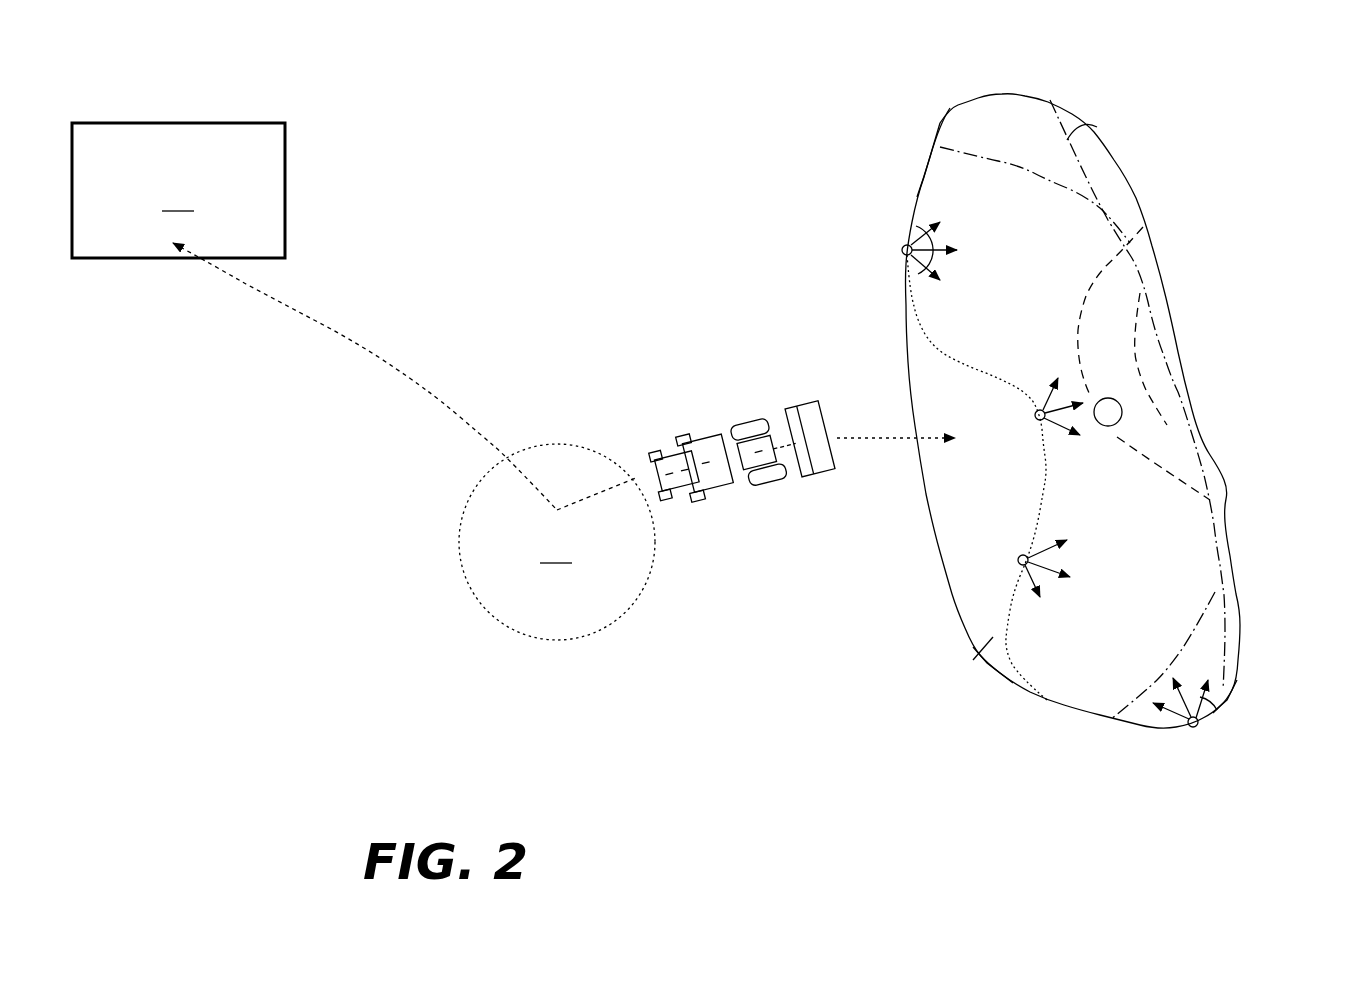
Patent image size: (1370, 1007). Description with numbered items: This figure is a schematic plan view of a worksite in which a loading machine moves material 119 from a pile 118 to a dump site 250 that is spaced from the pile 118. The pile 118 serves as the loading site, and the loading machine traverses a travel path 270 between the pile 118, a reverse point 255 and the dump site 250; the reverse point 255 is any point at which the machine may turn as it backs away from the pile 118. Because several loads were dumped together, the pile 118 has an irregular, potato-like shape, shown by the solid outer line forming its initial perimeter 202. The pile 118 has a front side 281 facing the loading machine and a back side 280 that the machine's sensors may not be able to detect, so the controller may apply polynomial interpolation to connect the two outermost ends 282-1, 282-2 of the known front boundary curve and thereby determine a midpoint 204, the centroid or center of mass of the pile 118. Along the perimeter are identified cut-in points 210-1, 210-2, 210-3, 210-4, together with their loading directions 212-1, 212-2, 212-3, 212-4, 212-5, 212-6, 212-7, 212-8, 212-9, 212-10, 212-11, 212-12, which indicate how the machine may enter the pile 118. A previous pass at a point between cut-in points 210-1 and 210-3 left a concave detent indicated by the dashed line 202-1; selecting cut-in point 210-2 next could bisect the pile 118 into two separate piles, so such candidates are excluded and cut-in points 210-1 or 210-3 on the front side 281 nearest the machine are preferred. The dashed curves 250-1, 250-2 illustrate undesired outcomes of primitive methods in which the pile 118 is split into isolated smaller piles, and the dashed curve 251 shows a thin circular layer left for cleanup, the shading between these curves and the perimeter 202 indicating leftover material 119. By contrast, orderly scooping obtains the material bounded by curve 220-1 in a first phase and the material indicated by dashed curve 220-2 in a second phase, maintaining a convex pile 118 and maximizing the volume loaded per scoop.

The pile 118 is at (995, 689).
The material 119 is at (973, 660).
The initial perimeter 202 is at (963, 627).
The dashed line 202-1 is at (1043, 481).
The midpoint 204 is at (1120, 422).
The cut-in point 210-1 is at (900, 250).
The cut-in point 210-2 is at (1033, 420).
The cut-in point 210-3 is at (1017, 560).
The cut-in point 210-4 is at (1193, 728).
The loading direction 212-1 is at (916, 232).
The loading direction 212-2 is at (913, 224).
The loading direction 212-3 is at (910, 268).
The loading direction 212-4 is at (1040, 392).
The loading direction 212-5 is at (1038, 410).
The loading direction 212-6 is at (1058, 430).
The loading direction 212-7 is at (1043, 547).
The loading direction 212-8 is at (1047, 603).
The loading direction 212-9 is at (1027, 573).
The loading direction 212-10 is at (1160, 713).
The loading direction 212-11 is at (1183, 717).
The loading direction 212-12 is at (1217, 687).
The curve 220-1 is at (1120, 243).
The dashed curve 220-2 is at (1130, 327).
The dump site 250 is at (178, 190).
The dashed curve 250-1 is at (1013, 168).
The dashed curve 250-2 is at (1207, 630).
The dashed curve 251 is at (1067, 137).
The reverse point 255 is at (557, 542).
The travel path 270 is at (410, 383).
The back side 280 is at (1196, 288).
The front side 281 is at (783, 350).
The outermost end 282-1 is at (915, 66).
The outermost end 282-2 is at (1245, 705).